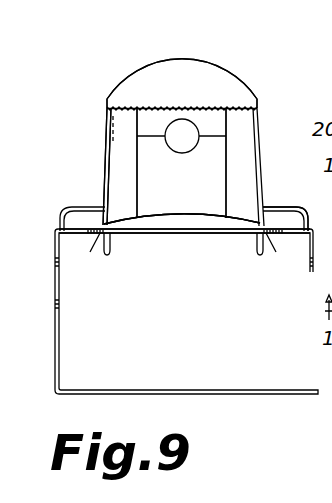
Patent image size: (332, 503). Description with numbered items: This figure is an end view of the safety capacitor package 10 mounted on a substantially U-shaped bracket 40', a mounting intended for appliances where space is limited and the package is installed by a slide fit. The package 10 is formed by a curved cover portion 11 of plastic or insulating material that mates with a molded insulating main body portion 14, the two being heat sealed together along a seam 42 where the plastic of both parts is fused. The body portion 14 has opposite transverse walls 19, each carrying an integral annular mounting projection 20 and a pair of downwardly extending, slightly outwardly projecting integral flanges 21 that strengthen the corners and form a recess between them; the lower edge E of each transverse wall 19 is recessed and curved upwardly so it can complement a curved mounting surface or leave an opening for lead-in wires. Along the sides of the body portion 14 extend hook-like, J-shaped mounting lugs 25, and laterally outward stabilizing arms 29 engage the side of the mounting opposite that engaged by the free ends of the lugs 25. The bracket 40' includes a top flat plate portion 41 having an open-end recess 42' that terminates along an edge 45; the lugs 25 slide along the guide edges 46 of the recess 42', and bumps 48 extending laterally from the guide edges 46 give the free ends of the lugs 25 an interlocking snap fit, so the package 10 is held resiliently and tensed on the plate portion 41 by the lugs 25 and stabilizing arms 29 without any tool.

The safety capacitor package 10 is at (227, 68).
The curved cover portion 11 is at (222, 82).
The main body portion 14 is at (107, 118).
The transverse walls 19 is at (143, 157).
The annular mounting projections 20 is at (192, 145).
The integral flanges 21 is at (222, 160).
The lower recessed edge E is at (174, 215).
The stabilizing arms 29 is at (67, 212).
The top flat plate portion 41 is at (287, 230).
The seam 42 is at (182, 90).
The recess 42' is at (182, 256).
The edge 45 is at (165, 235).
The guide edges 46 is at (112, 237).
The mounting lugs 25 is at (107, 255).
The bumps 48 is at (92, 240).
The U-shaped bracket 40' is at (186, 337).